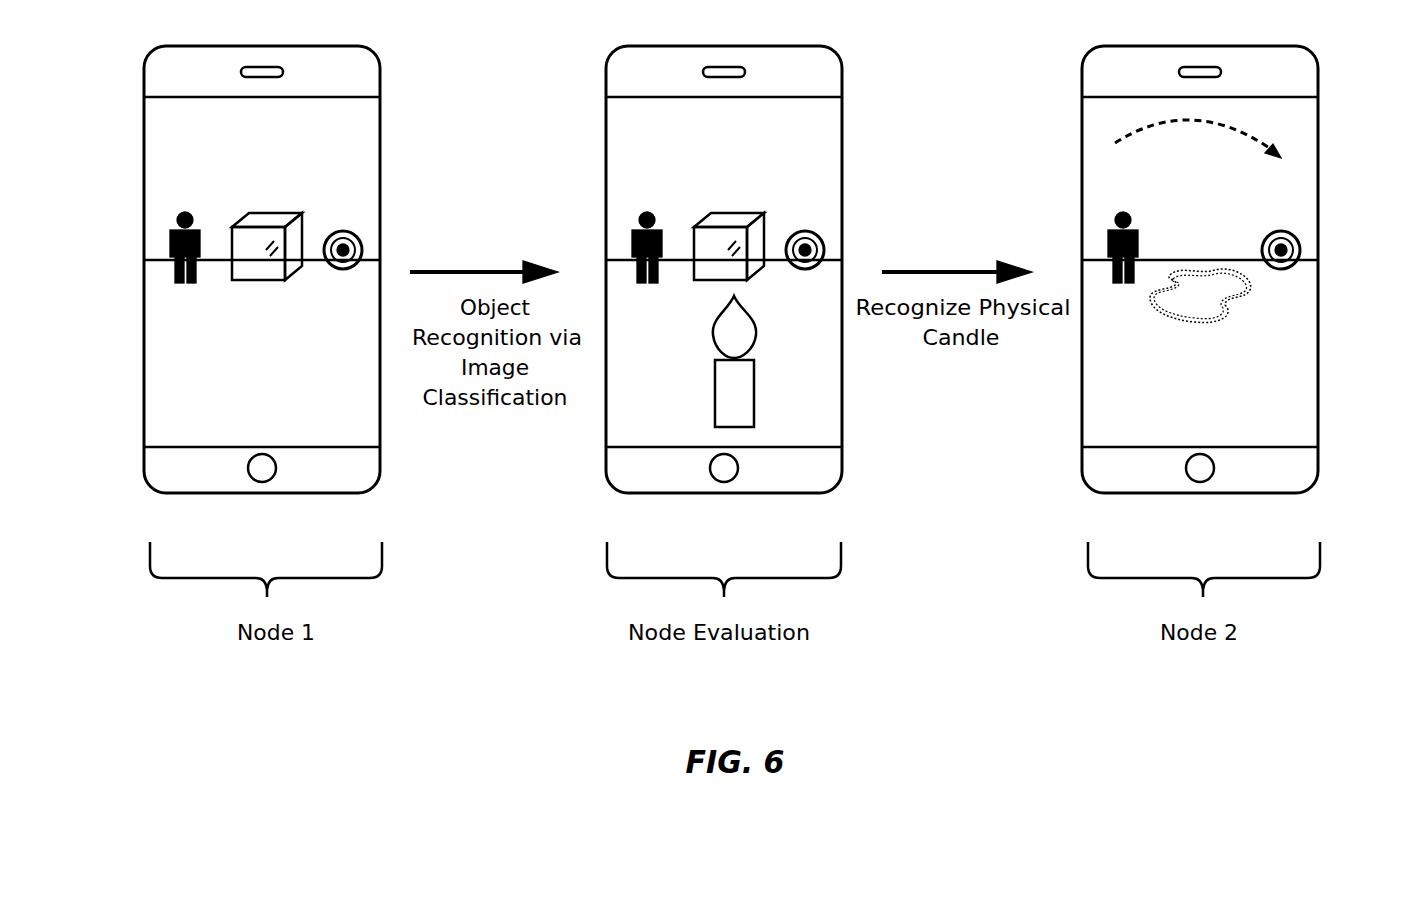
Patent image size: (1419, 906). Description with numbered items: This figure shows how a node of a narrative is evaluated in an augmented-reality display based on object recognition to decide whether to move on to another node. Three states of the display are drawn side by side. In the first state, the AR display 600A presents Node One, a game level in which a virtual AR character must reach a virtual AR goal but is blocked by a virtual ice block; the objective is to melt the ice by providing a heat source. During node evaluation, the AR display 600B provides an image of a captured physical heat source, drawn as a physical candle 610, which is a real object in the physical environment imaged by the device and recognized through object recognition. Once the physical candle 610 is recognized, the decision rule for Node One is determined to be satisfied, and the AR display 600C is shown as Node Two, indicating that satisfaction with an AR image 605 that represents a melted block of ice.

The AR display 600A is at (295, 269).
The AR display 600B is at (760, 269).
The AR display 600C is at (1236, 269).
The AR image 605 is at (1200, 268).
The physical candle 610 is at (778, 378).